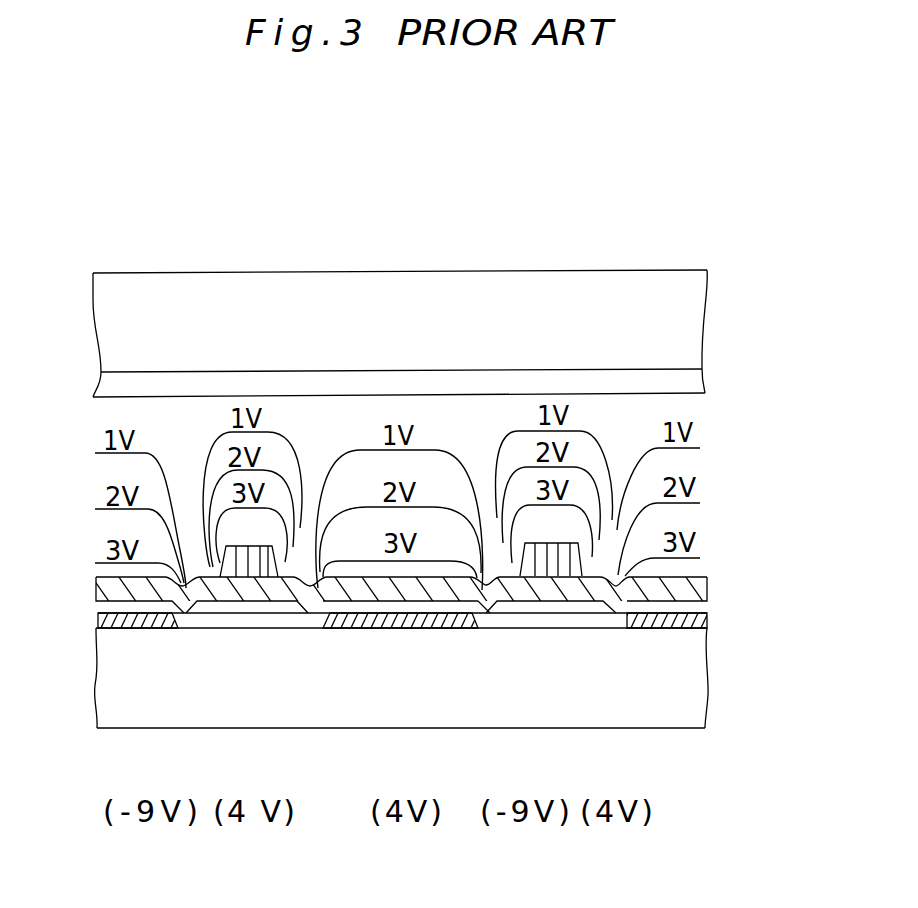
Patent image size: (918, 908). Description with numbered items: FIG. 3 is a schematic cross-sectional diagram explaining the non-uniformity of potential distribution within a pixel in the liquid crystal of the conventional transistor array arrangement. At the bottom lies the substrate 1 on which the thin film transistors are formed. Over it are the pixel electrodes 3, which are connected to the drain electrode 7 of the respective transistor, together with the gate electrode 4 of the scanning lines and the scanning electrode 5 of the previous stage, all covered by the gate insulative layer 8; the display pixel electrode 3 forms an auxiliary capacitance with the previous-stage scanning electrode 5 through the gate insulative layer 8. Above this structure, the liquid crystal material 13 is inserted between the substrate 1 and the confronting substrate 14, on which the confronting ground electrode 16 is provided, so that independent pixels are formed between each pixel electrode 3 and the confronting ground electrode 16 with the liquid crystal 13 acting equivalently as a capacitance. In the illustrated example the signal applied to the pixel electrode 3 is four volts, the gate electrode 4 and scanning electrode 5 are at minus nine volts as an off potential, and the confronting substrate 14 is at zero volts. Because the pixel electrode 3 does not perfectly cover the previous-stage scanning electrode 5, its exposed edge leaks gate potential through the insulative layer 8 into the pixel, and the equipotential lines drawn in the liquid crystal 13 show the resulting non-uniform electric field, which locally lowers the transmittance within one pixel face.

The substrate 1 is at (677, 710).
The pixel electrode 3 is at (100, 627).
The gate electrode 4 is at (228, 608).
The scanning electrode 5 is at (570, 606).
The drain electrode 7 is at (538, 553).
The gate insulative layer 8 is at (700, 585).
The liquid crystal material 13 is at (117, 407).
The confronting substrate 14 is at (624, 298).
The confronting ground electrode 16 is at (647, 380).